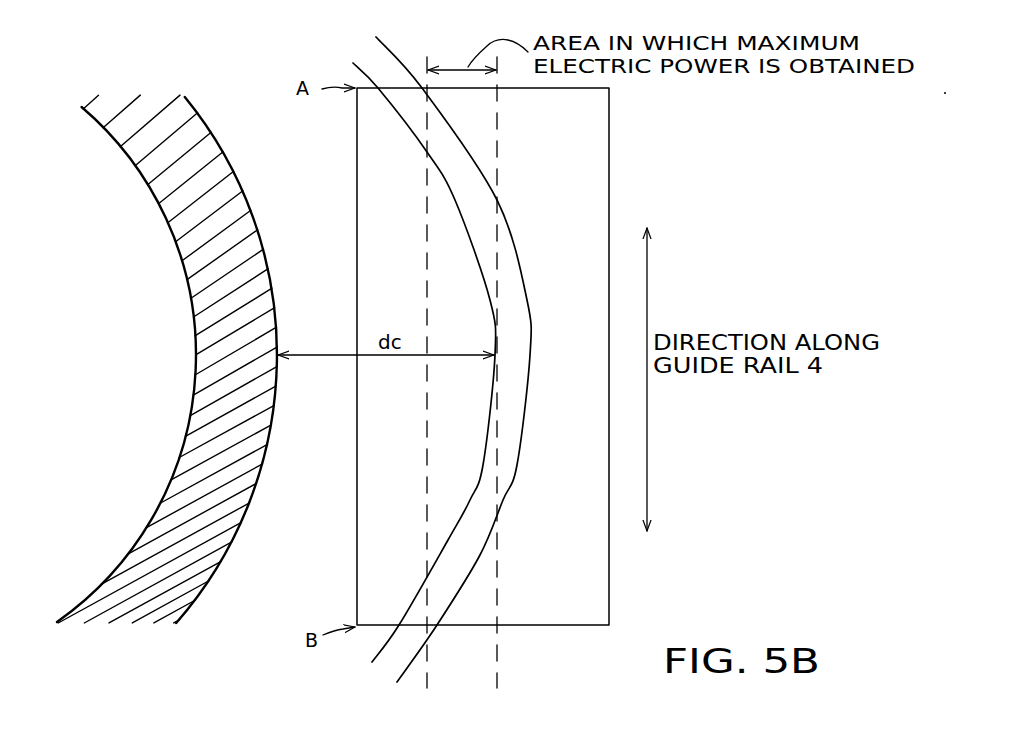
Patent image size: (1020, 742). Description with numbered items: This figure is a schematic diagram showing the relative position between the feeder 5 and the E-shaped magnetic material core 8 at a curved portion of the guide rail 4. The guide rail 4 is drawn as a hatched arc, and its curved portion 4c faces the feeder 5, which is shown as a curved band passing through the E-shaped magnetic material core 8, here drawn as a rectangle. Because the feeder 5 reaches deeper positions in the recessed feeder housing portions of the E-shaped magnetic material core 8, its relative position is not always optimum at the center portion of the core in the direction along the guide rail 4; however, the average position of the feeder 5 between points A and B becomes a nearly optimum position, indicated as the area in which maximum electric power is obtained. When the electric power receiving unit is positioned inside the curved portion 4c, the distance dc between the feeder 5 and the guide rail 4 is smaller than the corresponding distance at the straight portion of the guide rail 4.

The guide rail 4 is at (167, 359).
The curved portion 4c is at (182, 262).
The feeder 5 is at (415, 127).
The E-shaped magnetic material core 8 is at (609, 176).